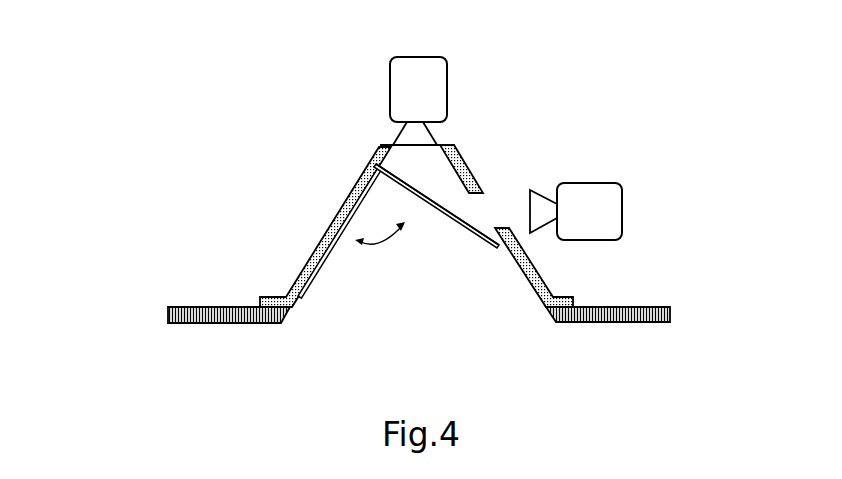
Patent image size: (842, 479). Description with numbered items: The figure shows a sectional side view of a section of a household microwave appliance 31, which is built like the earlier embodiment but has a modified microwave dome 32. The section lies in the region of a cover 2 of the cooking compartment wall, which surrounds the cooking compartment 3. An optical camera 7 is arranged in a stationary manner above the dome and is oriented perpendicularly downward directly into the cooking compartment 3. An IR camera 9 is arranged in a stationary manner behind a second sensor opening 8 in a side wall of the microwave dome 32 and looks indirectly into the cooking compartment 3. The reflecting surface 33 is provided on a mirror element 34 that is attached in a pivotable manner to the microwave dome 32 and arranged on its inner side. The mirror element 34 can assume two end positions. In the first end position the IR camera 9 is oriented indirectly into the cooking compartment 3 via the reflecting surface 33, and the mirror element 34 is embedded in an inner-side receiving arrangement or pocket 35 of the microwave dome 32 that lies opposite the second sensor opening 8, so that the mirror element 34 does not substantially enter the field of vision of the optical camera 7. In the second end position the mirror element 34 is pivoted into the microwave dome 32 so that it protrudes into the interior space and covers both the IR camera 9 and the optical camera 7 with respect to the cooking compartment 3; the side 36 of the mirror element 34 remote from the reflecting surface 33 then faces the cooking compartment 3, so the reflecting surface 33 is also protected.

The household microwave appliance 31 is at (172, 93).
The optical camera 7 is at (447, 88).
The IR camera 9 is at (587, 183).
The second sensor opening 8 is at (487, 200).
The cover 2 is at (210, 307).
The cooking compartment 3 is at (224, 366).
The receiving arrangement or pocket 35 is at (327, 233).
The reflecting surface 33 is at (450, 207).
The microwave dome 32 is at (547, 287).
The mirror element 34 is at (313, 273).
The side of the mirror element remote from the reflecting surface 36 is at (470, 233).